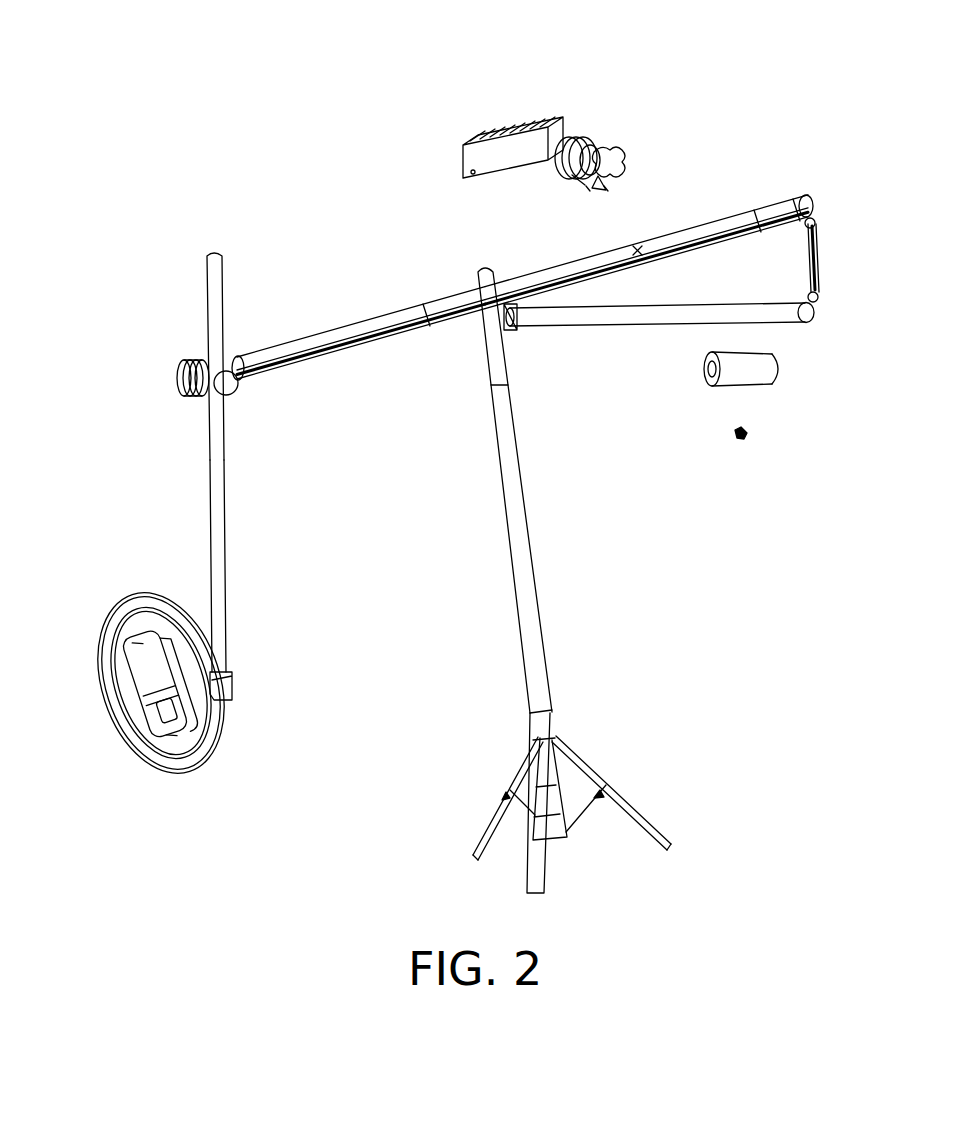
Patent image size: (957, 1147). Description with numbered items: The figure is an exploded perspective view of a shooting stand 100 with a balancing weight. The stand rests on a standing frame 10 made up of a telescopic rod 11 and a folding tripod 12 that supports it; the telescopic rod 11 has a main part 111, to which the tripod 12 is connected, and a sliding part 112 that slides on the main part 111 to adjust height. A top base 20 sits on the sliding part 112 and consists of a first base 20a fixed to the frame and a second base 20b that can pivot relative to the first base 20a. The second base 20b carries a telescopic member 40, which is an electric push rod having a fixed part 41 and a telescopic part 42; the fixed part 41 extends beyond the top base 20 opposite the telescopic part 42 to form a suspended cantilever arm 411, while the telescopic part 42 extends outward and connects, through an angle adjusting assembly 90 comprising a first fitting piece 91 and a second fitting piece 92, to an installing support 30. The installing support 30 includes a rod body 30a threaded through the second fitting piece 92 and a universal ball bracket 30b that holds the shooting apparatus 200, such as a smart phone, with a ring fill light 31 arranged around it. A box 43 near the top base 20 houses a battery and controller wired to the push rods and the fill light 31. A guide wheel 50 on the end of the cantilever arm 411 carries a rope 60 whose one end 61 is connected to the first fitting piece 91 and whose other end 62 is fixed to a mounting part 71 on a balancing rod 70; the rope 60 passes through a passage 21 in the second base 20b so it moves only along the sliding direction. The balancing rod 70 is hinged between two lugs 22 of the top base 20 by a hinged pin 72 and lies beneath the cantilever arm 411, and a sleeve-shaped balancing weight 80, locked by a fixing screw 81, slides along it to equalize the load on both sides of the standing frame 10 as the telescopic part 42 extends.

The shooting stand 100 is at (186, 42).
The standing frame 10 is at (367, 440).
The telescopic rod 11 is at (400, 393).
The main part 111 is at (505, 538).
The sliding part 112 is at (492, 363).
The tripod 12 is at (523, 733).
The top base 20 is at (643, 46).
The first base 20a is at (568, 140).
The second base 20b is at (610, 156).
The passage 21 is at (573, 178).
The lugs 22 is at (607, 190).
The installing support 30 is at (103, 490).
The rod body 30a is at (212, 540).
The universal ball bracket 30b is at (212, 683).
The ring fill light 31 is at (190, 753).
The shooting apparatus 200 is at (152, 717).
The telescopic member 40 is at (388, 152).
The fixed part 41 is at (455, 284).
The cantilever arm 411 is at (638, 250).
The telescopic part 42 is at (367, 333).
The box 43 is at (474, 138).
The guide wheel 50 is at (806, 217).
The rope 60 is at (738, 234).
The one end of the rope 61 is at (293, 355).
The other end of the rope 62 is at (816, 258).
The balancing rod 70 is at (683, 328).
The mounting part 71 is at (818, 296).
The hinged pin 72 is at (518, 318).
The balancing weight 80 is at (767, 371).
The fixing screw 81 is at (745, 436).
The angle adjusting assembly 90 is at (103, 330).
The first fitting piece 91 is at (178, 362).
The second fitting piece 92 is at (198, 393).